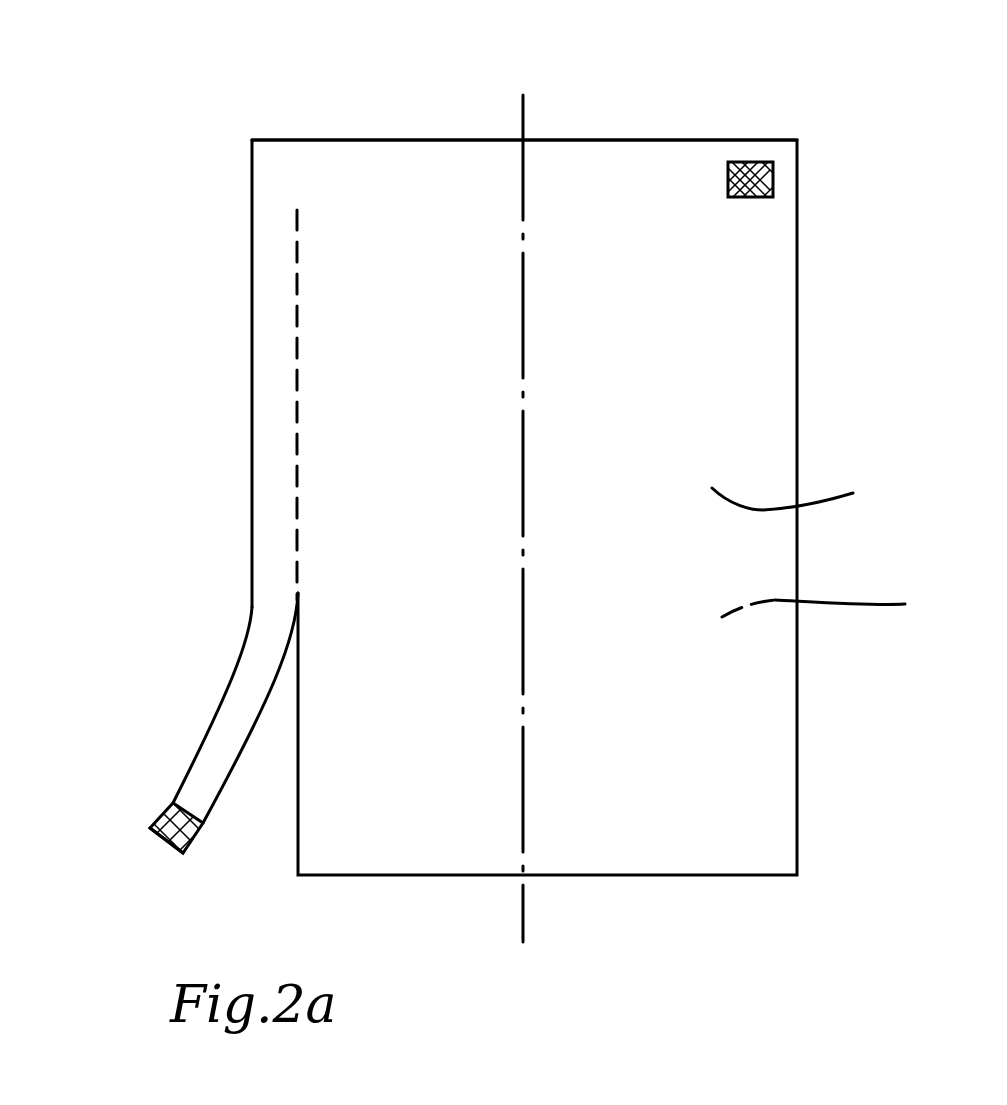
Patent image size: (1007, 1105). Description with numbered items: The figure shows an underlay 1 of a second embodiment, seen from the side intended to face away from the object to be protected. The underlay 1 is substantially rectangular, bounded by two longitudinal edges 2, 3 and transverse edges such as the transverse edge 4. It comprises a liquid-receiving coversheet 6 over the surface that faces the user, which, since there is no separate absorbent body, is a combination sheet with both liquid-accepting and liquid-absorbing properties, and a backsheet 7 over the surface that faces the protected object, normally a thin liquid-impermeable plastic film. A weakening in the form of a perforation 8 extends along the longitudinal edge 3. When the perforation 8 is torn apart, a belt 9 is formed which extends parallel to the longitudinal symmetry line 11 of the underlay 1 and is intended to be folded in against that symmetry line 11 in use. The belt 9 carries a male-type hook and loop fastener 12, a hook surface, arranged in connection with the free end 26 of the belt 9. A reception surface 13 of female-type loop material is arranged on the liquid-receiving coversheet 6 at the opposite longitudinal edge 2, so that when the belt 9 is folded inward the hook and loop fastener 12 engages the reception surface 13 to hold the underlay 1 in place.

The underlay 1 is at (140, 112).
The longitudinal edge 2 is at (797, 300).
The longitudinal edge 3 is at (252, 417).
The transverse edge 4 is at (592, 140).
The liquid-receiving coversheet 6 is at (797, 489).
The backsheet 7 is at (826, 605).
The perforation 8 is at (297, 328).
The belt 9 is at (243, 715).
The longitudinal symmetry line 11 is at (527, 900).
The hook and loop fastener 12 is at (170, 812).
The reception surface 13 is at (773, 192).
The free end 26 is at (162, 847).